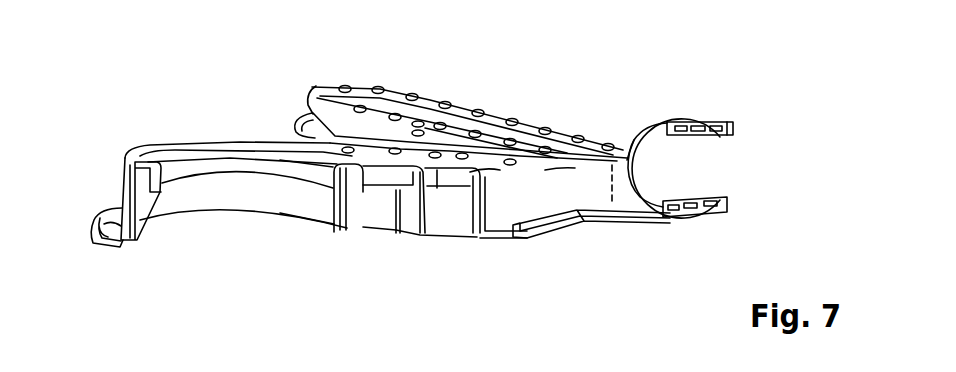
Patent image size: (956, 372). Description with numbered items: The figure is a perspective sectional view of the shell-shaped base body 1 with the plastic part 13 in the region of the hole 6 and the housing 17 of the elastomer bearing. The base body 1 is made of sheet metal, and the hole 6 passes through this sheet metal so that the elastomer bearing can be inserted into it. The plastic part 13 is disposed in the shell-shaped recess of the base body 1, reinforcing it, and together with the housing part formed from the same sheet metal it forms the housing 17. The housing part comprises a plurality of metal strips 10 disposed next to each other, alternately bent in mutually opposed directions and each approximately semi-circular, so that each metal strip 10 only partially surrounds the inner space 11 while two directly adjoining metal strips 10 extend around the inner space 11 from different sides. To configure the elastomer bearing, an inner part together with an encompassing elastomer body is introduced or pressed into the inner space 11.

The base body 1 is at (313, 108).
The hole 6 is at (197, 147).
The metal strips 10 is at (731, 122).
The inner space 11 is at (693, 172).
The plastic part 13 is at (353, 215).
The housing 17 is at (687, 122).